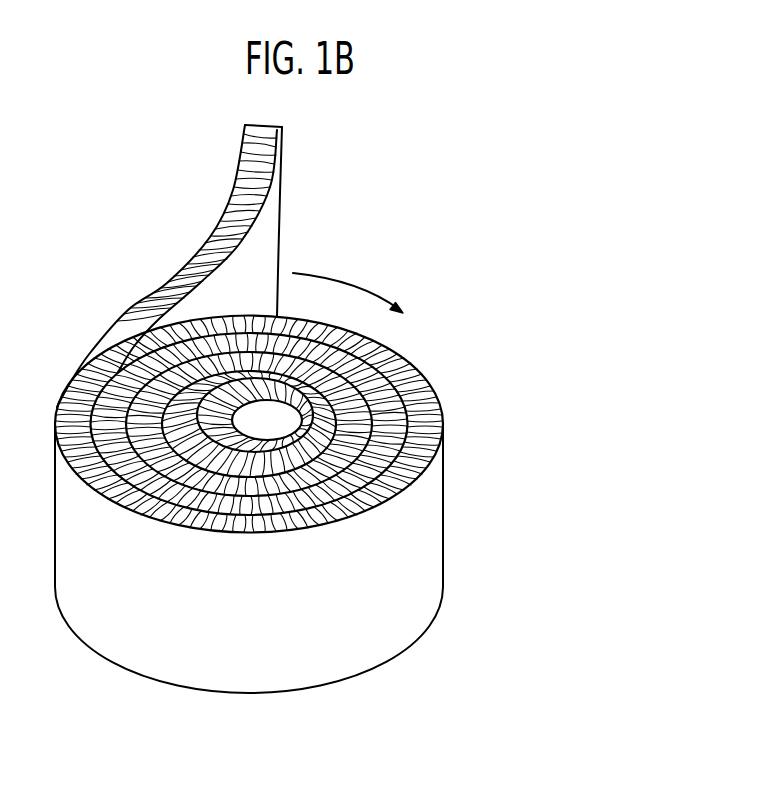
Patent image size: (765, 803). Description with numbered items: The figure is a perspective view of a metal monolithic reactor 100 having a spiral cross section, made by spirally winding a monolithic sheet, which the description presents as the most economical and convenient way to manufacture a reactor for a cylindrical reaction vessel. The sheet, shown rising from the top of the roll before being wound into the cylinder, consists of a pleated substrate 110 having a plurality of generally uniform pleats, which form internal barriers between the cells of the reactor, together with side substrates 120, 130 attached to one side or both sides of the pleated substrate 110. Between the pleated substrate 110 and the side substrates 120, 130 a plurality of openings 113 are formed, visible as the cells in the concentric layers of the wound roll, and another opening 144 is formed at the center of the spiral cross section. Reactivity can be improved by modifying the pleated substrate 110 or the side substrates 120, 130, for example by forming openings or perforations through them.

The electrode assembly 100 is at (592, 579).
The pleated substrate 110 is at (210, 242).
The openings 113 is at (431, 413).
The side substrate 120 is at (235, 171).
The side substrate 130 is at (268, 240).
The opening 144 is at (350, 372).